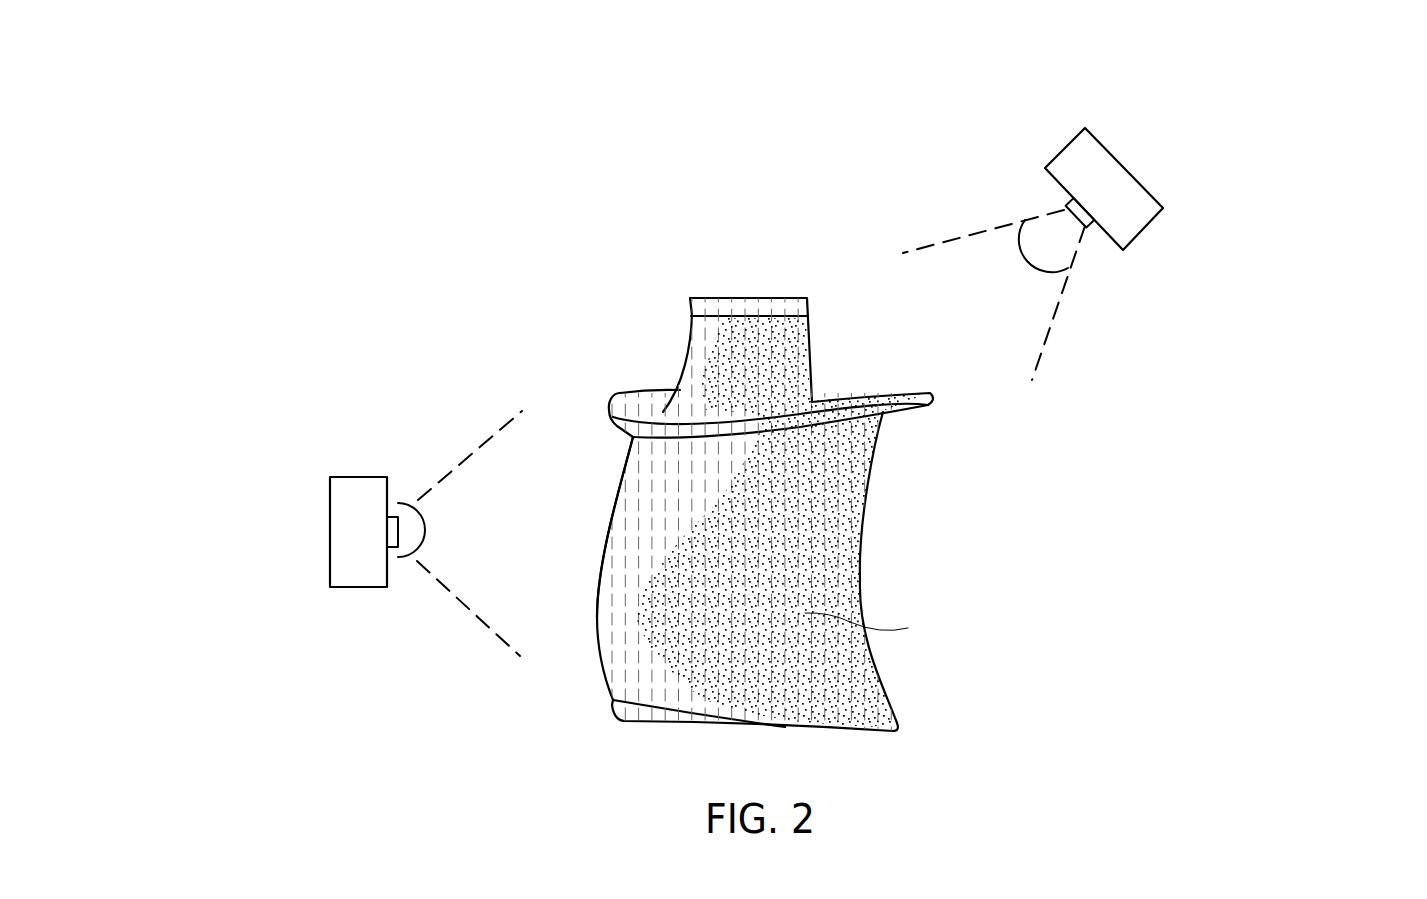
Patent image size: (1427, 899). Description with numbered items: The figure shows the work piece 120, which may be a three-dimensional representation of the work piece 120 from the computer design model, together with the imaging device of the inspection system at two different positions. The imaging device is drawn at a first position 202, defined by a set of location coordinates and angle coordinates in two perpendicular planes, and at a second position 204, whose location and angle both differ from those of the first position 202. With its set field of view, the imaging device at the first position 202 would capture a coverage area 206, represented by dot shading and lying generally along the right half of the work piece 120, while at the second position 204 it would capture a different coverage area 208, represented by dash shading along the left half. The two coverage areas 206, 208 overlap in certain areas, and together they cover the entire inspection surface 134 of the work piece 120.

The work piece 120 is at (739, 510).
The inspection surface 134 is at (877, 626).
The first position 202 is at (1160, 208).
The second position 204 is at (287, 532).
The coverage area 206 is at (838, 527).
The coverage area 208 is at (640, 508).